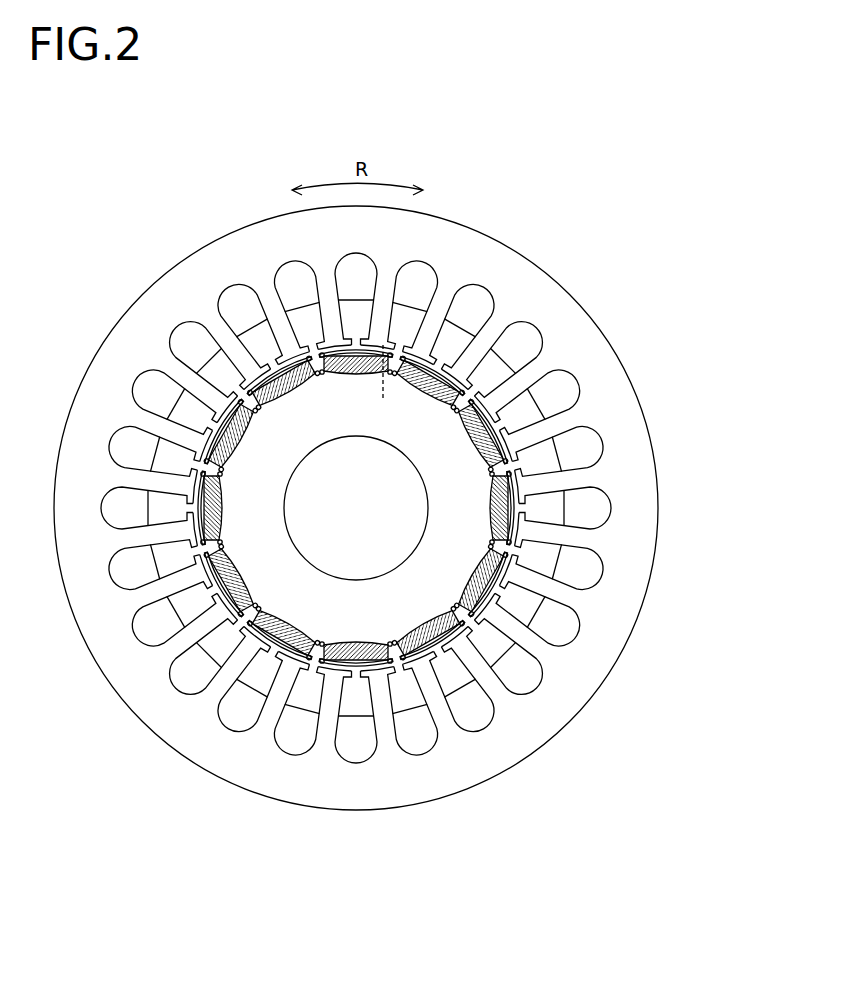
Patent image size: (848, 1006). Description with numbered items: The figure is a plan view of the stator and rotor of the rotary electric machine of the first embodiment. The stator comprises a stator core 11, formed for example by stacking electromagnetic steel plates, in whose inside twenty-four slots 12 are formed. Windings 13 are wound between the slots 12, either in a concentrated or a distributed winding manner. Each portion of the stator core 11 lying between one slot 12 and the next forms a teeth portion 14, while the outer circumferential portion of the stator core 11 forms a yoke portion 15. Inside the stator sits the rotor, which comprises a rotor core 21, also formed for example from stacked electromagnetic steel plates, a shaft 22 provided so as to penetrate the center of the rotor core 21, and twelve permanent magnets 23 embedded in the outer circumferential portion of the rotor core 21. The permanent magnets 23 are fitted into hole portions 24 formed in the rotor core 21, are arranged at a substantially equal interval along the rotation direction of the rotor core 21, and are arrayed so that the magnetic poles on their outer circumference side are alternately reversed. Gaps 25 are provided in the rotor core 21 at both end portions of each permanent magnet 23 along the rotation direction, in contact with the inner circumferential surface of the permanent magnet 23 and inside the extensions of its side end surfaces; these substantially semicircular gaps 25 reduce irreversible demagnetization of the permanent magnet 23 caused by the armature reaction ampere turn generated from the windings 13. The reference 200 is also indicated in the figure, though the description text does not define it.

The stator core 11 is at (367, 500).
The slots 12 is at (522, 318).
The windings 13 is at (517, 335).
The teeth portion 14 is at (492, 337).
The yoke portion 15 is at (623, 450).
The gap 200 is at (383, 403).
The rotor core 21 is at (459, 605).
The shaft 22 is at (462, 560).
The permanent magnets 23 is at (470, 612).
The hole portions 24 is at (340, 662).
The gaps 25 is at (329, 647).